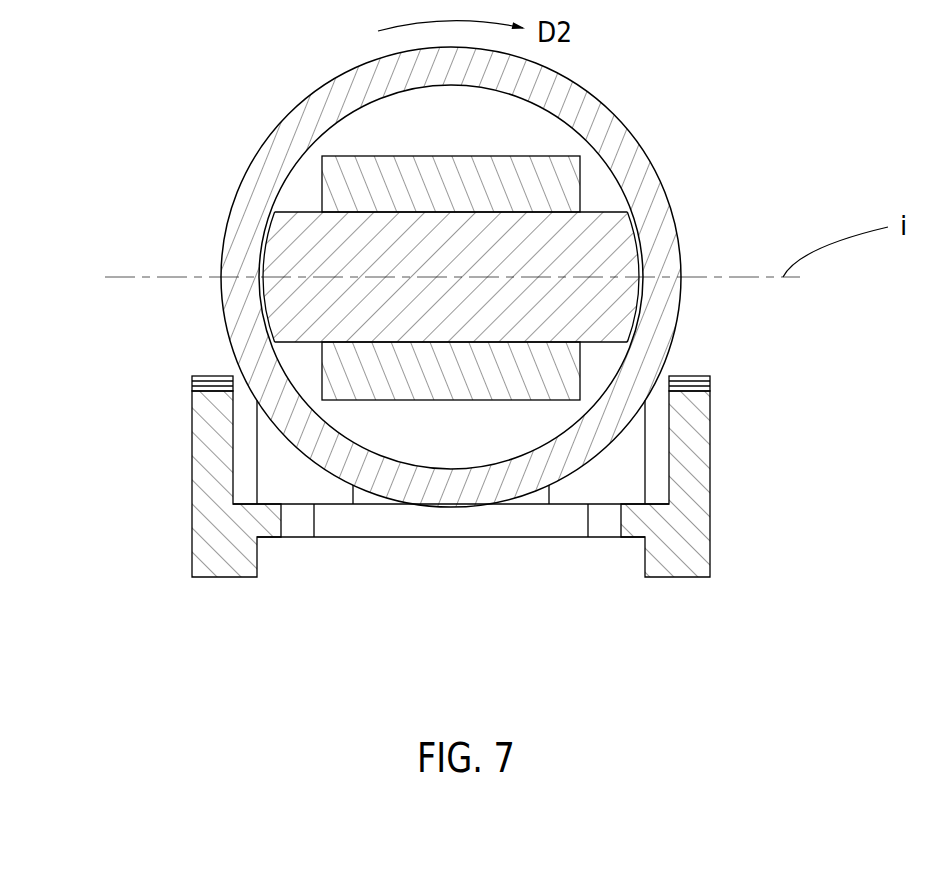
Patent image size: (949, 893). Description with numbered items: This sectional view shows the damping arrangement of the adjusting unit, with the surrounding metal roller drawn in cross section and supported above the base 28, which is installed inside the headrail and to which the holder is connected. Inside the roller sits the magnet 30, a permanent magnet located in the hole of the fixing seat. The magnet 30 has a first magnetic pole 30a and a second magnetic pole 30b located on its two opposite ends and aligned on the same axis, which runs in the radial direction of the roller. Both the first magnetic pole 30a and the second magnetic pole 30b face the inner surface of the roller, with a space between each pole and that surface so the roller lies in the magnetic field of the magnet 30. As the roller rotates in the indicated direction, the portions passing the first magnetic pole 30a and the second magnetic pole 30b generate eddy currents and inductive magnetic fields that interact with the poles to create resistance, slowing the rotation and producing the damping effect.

The base 28 is at (703, 464).
The magnet 30 is at (481, 277).
The first magnetic pole 30a is at (635, 240).
The second magnetic pole 30b is at (263, 250).